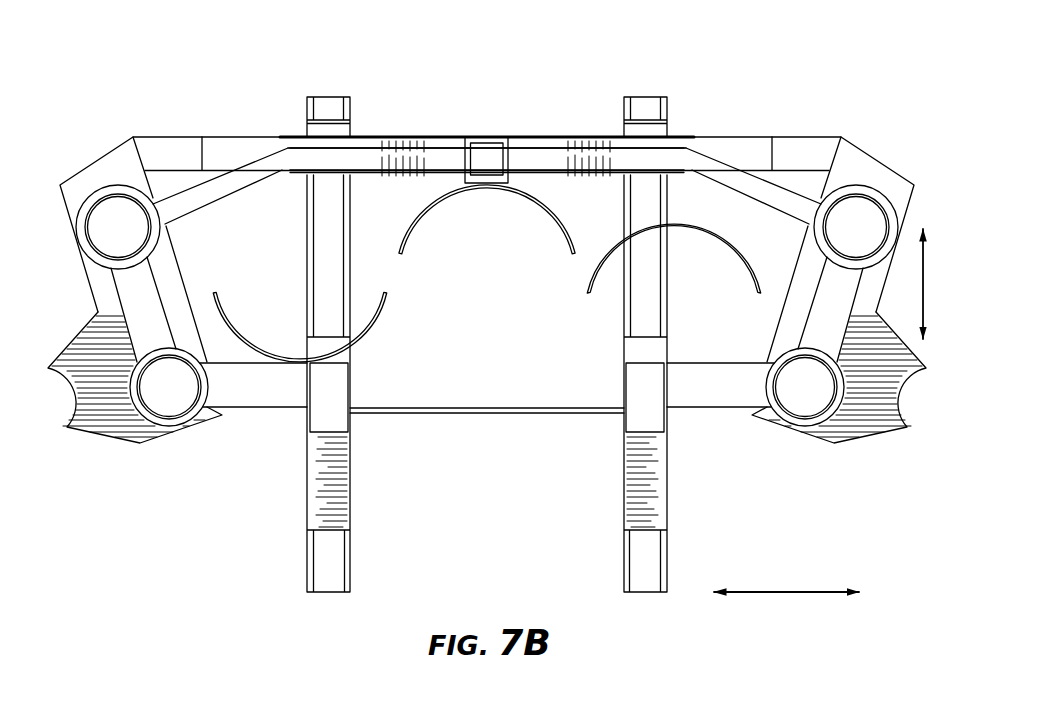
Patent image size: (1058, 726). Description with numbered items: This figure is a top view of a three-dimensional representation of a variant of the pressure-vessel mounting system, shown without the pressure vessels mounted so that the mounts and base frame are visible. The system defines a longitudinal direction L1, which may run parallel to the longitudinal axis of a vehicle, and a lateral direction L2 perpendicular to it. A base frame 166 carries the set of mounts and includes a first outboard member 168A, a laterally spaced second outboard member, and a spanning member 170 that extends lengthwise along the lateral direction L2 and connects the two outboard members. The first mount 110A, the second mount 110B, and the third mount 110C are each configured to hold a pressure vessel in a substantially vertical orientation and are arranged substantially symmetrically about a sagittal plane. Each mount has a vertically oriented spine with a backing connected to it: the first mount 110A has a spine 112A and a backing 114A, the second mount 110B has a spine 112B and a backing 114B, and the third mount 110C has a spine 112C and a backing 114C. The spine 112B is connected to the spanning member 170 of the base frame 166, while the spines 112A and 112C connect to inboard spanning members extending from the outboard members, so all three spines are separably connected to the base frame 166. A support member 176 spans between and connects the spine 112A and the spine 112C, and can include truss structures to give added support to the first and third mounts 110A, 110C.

The first mount 110A is at (685, 430).
The second mount 110B is at (494, 130).
The third mount 110C is at (291, 429).
The spine 112A is at (643, 390).
The spine 112B is at (480, 153).
The spine 112C is at (331, 416).
The backing 114A is at (737, 303).
The backing 114B is at (560, 233).
The backing 114C is at (241, 303).
The base frame 166 is at (110, 457).
The first outboard member 168A is at (827, 434).
The spanning member 170 is at (237, 155).
The support member 176 is at (467, 414).
The longitudinal direction L1 is at (926, 301).
The lateral direction L2 is at (778, 590).